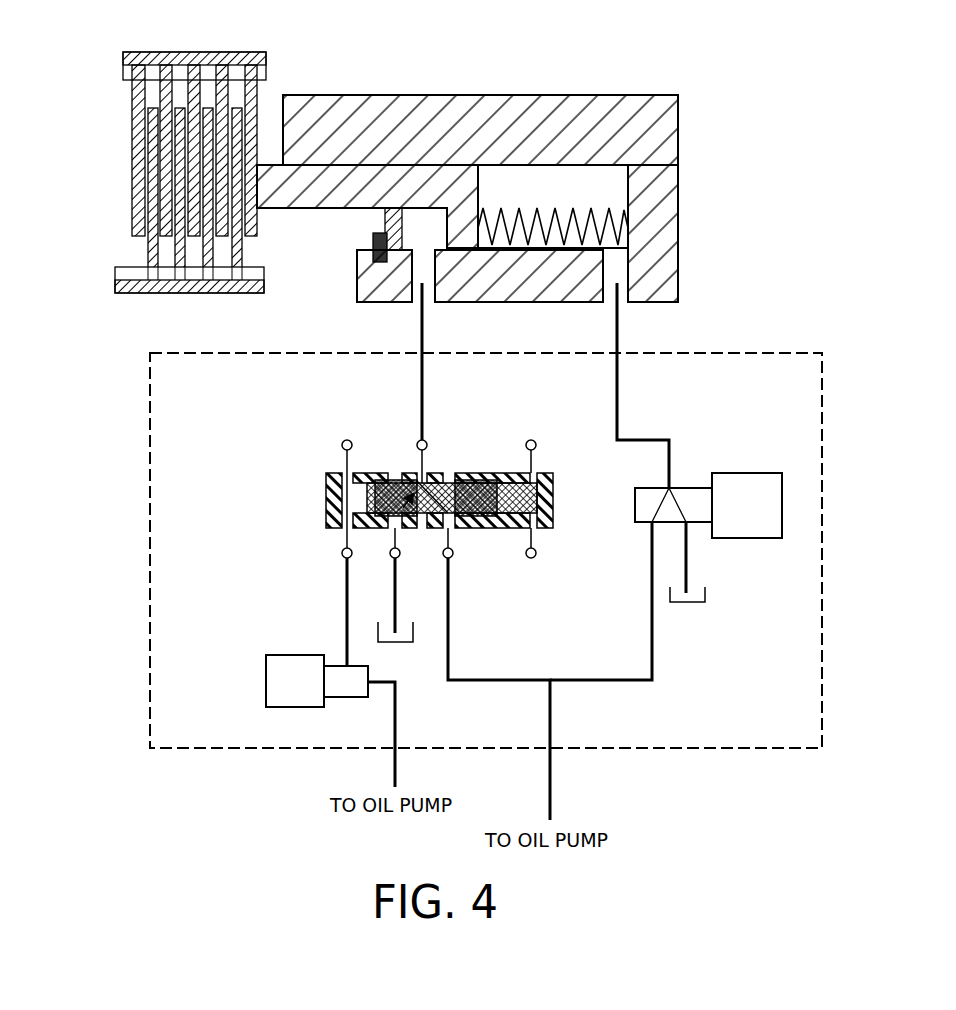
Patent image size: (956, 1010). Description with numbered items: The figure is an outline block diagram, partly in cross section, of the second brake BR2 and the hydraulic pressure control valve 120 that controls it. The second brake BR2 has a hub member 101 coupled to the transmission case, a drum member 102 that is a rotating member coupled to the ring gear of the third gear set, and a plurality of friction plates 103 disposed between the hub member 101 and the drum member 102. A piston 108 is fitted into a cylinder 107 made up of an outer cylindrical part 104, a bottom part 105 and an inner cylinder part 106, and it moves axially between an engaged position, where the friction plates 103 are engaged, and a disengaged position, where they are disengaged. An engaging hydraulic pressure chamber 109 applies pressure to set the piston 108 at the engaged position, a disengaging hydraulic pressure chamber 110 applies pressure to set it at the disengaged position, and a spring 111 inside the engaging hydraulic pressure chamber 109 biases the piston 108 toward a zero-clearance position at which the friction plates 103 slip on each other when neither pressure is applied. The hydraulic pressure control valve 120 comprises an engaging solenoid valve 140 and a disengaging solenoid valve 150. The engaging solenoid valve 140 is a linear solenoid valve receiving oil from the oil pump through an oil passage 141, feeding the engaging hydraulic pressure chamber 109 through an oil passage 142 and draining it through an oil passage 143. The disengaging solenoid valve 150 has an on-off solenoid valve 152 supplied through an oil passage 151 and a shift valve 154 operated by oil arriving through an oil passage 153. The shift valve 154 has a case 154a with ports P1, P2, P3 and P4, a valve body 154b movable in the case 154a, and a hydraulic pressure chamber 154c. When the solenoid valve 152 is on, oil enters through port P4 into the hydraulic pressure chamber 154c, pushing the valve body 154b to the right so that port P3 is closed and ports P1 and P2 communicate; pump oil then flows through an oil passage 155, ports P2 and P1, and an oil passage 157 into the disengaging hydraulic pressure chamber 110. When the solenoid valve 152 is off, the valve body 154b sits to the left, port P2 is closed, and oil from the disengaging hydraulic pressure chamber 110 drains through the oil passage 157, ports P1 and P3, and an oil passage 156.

The hub member 101 is at (188, 293).
The drum member 102 is at (180, 52).
The friction plates 103 is at (131, 126).
The outer cylindrical part 104 is at (490, 95).
The bottom part 105 is at (655, 181).
The inner cylinder part 106 is at (530, 302).
The cylinder 107 is at (628, 200).
The piston 108 is at (320, 208).
The engaging hydraulic pressure chamber 109 is at (572, 198).
The disengaging hydraulic pressure chamber 110 is at (400, 255).
The spring 111 is at (600, 243).
The hydraulic pressure control valve 120 is at (150, 412).
The engaging solenoid valve 140 is at (721, 444).
The oil passage 141 is at (652, 606).
The oil passage 142 is at (617, 398).
The oil passage 143 is at (686, 565).
The disengaging solenoid valve 150 is at (244, 499).
The oil passage 151 is at (395, 708).
The solenoid valve 152 is at (266, 682).
The oil passage 153 is at (347, 603).
The shift valve 154 is at (424, 472).
The case 154a is at (326, 480).
The valve body 154b is at (481, 473).
The hydraulic pressure chamber 154c is at (345, 475).
The oil passage 155 is at (448, 603).
The oil passage 156 is at (395, 628).
The oil passage 157 is at (422, 397).
The port P1 is at (437, 459).
The port P2 is at (463, 548).
The port P3 is at (409, 548).
The port P4 is at (332, 509).
The second brake BR2 is at (684, 68).